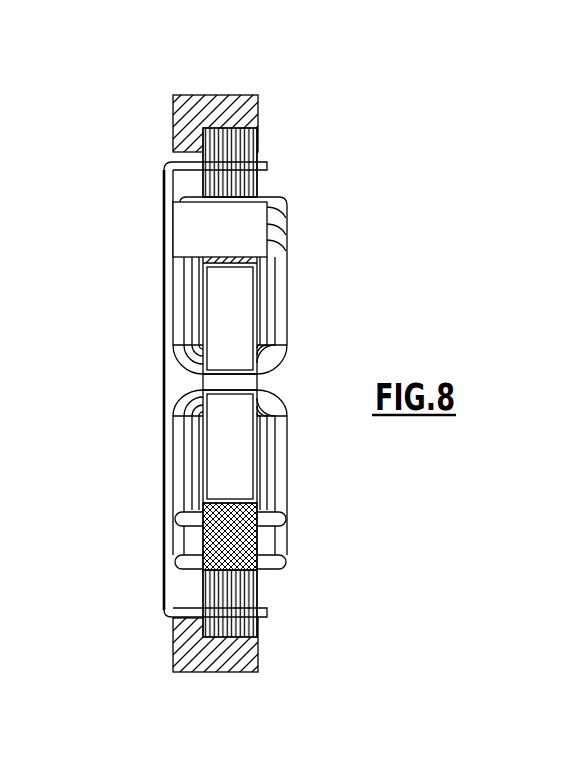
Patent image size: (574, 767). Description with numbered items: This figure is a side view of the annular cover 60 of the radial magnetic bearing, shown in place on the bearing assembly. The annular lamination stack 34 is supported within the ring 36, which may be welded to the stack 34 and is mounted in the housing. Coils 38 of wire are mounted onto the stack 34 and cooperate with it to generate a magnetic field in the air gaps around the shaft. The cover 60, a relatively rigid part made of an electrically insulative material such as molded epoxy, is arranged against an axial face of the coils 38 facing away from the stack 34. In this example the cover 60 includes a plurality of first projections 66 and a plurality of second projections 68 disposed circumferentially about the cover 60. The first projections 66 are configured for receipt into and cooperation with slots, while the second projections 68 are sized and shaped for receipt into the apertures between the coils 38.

The annular lamination stack 34 is at (262, 140).
The ring 36 is at (234, 95).
The coils 38 is at (288, 303).
The annular cover 60 is at (164, 282).
The first projections 66 is at (268, 164).
The second projections 68 is at (287, 225).